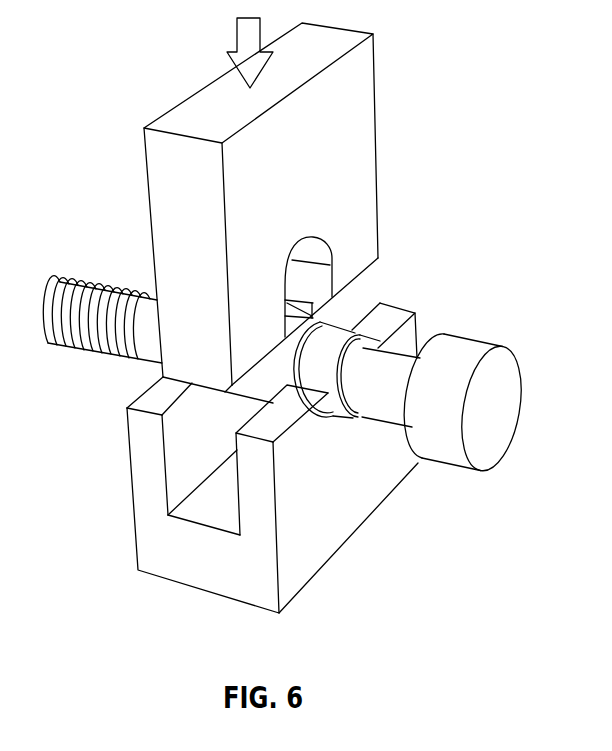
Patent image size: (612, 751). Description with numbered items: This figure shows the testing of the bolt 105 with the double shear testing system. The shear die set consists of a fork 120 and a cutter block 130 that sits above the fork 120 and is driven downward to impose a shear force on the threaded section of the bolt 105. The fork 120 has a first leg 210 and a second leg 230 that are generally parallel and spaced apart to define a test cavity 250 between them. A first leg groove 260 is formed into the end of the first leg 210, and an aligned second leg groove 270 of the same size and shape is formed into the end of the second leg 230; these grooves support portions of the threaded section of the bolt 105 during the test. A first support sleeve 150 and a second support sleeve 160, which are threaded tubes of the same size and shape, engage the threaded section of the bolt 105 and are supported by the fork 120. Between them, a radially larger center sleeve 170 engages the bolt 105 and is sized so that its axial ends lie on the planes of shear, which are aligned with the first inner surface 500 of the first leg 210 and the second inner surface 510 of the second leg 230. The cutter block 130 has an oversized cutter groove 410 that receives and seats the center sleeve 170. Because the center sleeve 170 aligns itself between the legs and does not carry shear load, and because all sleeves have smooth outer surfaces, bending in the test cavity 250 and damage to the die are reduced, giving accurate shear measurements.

The bolt 105 is at (465, 348).
The fork 120 is at (315, 578).
The cutter block 130 is at (345, 79).
The first support sleeve 150 is at (338, 345).
The second support sleeve 160 is at (141, 273).
The center sleeve 170 is at (305, 322).
The first leg 210 is at (370, 505).
The second leg 230 is at (128, 450).
The test cavity 250 is at (208, 497).
The first leg groove 260 is at (333, 397).
The second leg groove 270 is at (135, 421).
The cutter groove 410 is at (328, 252).
The first inner surface 500 is at (260, 503).
The second inner surface 510 is at (178, 470).